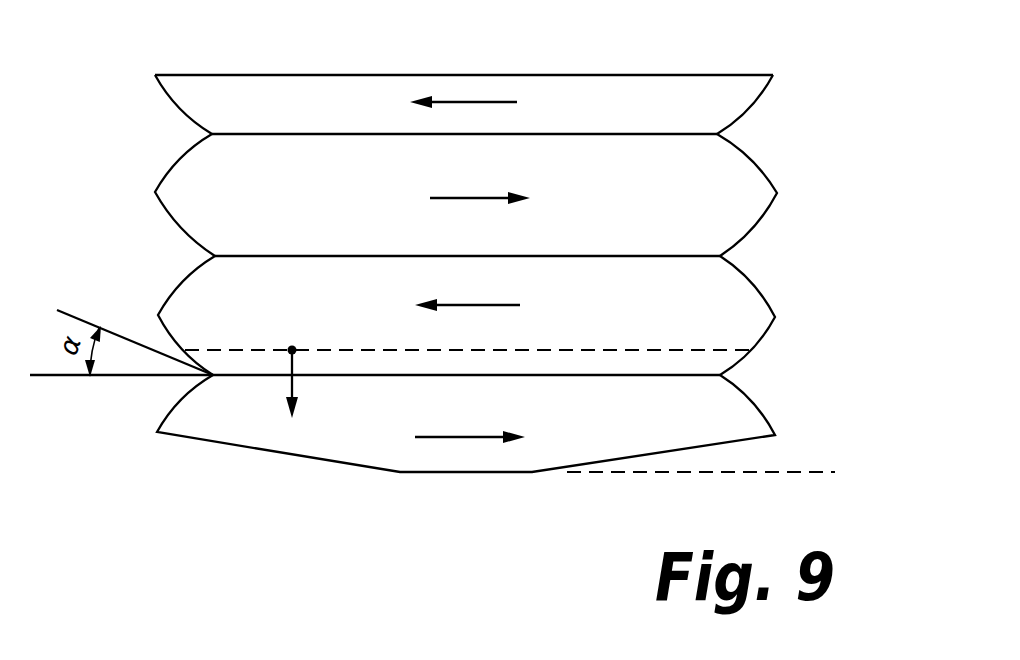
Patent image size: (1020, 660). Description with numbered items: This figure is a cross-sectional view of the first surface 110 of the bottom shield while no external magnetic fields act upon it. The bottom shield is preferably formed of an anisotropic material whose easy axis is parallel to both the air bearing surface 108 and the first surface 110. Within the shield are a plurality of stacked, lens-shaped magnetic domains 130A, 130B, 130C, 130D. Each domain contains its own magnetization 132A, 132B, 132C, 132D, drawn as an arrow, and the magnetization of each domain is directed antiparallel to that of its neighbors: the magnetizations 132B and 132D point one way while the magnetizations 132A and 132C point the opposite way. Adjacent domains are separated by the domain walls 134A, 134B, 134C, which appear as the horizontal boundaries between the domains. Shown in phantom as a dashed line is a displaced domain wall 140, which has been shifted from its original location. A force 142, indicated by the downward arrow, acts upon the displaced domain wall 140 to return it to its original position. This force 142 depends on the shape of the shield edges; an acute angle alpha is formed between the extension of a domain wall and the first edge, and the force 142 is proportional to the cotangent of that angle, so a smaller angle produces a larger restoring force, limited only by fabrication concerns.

The first surface 110 is at (443, 243).
The magnetic domain 130A is at (728, 115).
The magnetic domain 130B is at (722, 217).
The magnetic domain 130C is at (722, 326).
The magnetic domain 130D is at (722, 425).
The magnetization 132A is at (498, 100).
The magnetization 132B is at (516, 199).
The magnetization 132C is at (503, 307).
The magnetization 132D is at (503, 441).
The domain wall 134A is at (248, 137).
The domain wall 134B is at (247, 258).
The domain wall 134C is at (345, 376).
The displaced domain wall 140 is at (372, 350).
The force 142 is at (313, 399).
The air bearing surface 108 is at (767, 474).